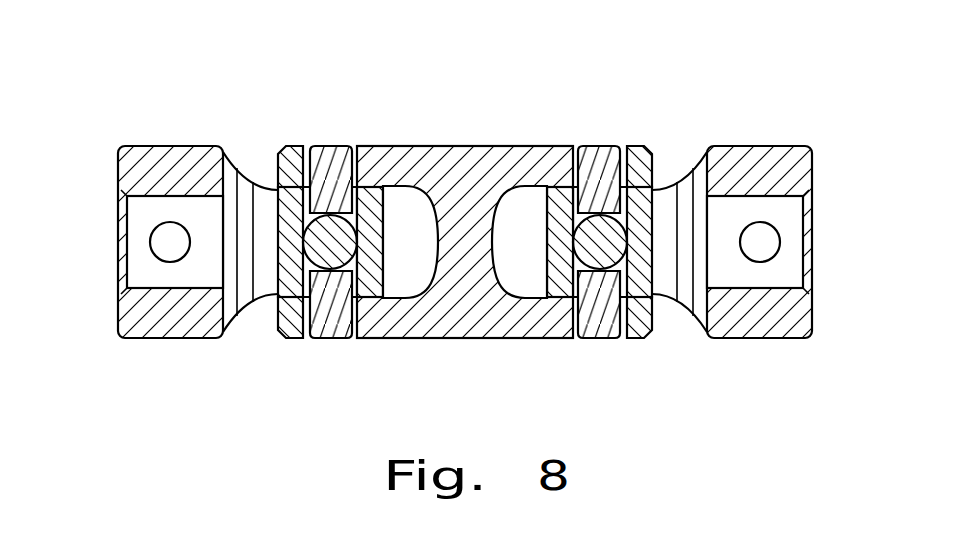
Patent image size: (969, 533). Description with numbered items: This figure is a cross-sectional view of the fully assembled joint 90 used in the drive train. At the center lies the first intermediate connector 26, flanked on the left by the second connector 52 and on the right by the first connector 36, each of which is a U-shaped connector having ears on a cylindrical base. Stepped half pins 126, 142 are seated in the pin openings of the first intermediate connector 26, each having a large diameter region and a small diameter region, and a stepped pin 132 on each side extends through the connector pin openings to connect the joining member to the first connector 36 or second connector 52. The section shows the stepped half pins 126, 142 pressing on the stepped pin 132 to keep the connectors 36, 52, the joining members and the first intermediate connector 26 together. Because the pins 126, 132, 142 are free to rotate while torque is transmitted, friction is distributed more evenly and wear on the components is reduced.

The joint 90 is at (476, 99).
The second connector 52 is at (138, 146).
The first connector 36 is at (783, 146).
The first intermediate connector 26 is at (500, 146).
The stepped pin 132 is at (302, 189).
The stepped half pin 142 is at (328, 157).
The stepped half pin 126 is at (332, 323).